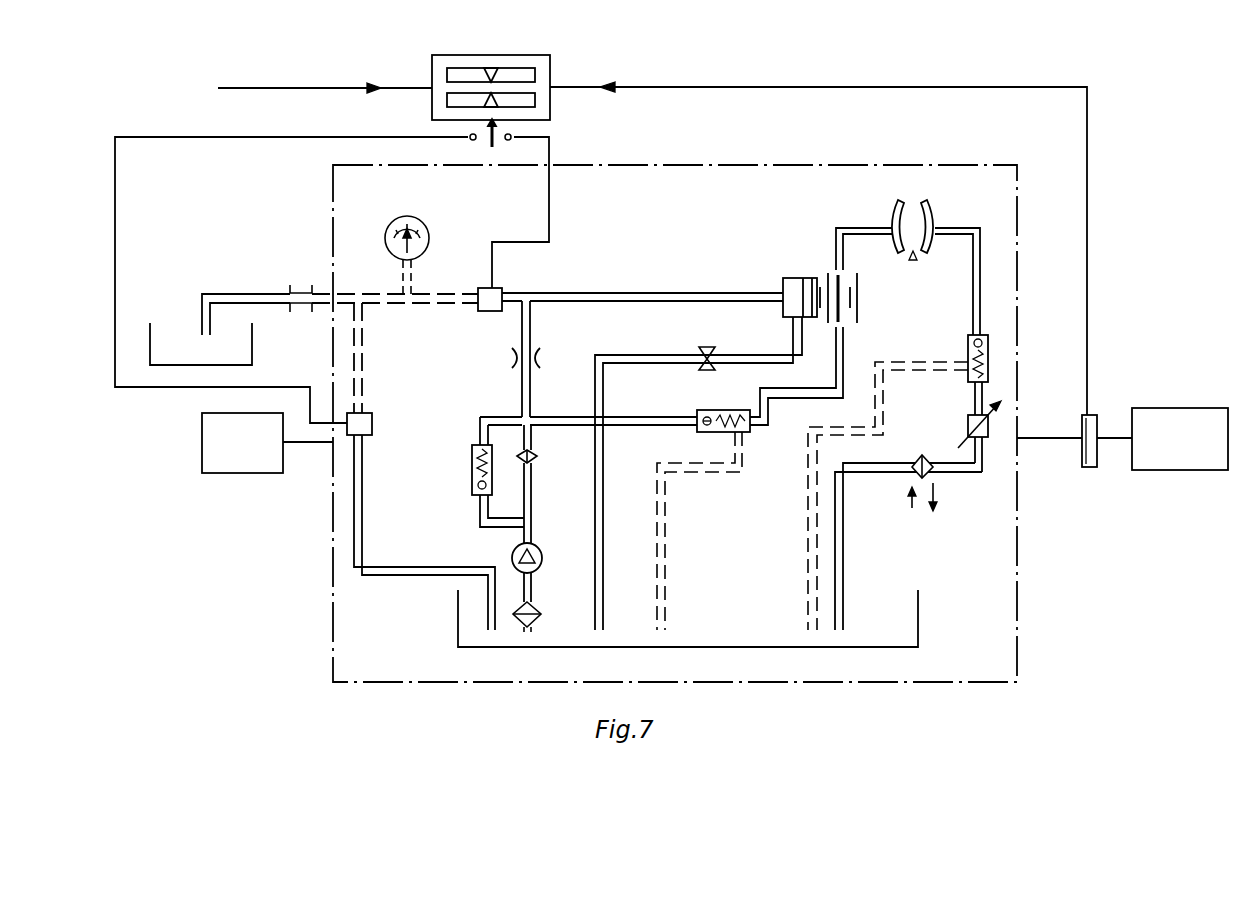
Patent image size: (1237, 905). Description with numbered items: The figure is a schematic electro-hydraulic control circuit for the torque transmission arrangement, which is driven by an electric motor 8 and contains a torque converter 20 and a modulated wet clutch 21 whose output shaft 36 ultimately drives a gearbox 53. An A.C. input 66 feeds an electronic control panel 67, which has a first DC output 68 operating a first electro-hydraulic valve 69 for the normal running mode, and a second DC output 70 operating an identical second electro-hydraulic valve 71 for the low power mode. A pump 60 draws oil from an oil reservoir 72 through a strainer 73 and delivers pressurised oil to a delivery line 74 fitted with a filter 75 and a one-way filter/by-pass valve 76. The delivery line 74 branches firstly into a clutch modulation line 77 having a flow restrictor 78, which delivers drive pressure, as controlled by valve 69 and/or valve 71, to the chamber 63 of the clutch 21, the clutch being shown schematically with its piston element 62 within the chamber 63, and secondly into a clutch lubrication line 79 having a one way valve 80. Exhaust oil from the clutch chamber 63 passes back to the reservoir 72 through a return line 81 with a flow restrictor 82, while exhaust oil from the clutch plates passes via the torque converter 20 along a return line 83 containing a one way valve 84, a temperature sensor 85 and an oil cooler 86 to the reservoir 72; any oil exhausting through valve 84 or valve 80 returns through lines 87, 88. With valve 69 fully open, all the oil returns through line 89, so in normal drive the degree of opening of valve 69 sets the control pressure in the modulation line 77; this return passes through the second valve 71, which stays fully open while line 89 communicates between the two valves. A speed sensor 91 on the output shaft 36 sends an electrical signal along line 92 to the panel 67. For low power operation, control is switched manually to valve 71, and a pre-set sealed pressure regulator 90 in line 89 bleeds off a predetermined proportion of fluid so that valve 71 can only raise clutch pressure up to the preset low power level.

The electric motor 8 is at (250, 472).
The torque converter 20 is at (938, 195).
The modulated wet clutch 21 is at (854, 252).
The output shaft 36 is at (1050, 440).
The gearbox 53 is at (1187, 460).
The pump 60 is at (541, 563).
The piston 62 is at (806, 278).
The clutch chamber 63 is at (785, 280).
The A.C. input 66 is at (344, 86).
The electronic control panel 67 is at (548, 63).
The first DC output 68 is at (552, 148).
The first electro-hydraulic valve 69 is at (508, 286).
The second DC output 70 is at (327, 137).
The second electro-hydraulic valve 71 is at (380, 423).
The oil reservoir 72 is at (252, 348).
The strainer 73 is at (542, 603).
The delivery line 74 is at (522, 533).
The filter 75 is at (532, 462).
The one-way filter/by-pass valve 76 is at (472, 463).
The clutch modulation line 77 is at (562, 375).
The flow restrictor 78 is at (511, 358).
The clutch lubrication line 79 is at (568, 425).
The one way valve 80 is at (718, 410).
The return line 81 is at (746, 358).
The flow restrictor 82 is at (705, 347).
The return line 83 is at (983, 278).
The one way valve 84 is at (988, 355).
The temperature sensor 85 is at (988, 423).
The oil cooler 86 is at (912, 470).
The return line 87 is at (833, 432).
The return line 88 is at (694, 472).
The return line 89 is at (364, 520).
The pressure regulator 90 is at (300, 285).
The speed sensor 91 is at (1090, 470).
The signal line 92 is at (1087, 193).